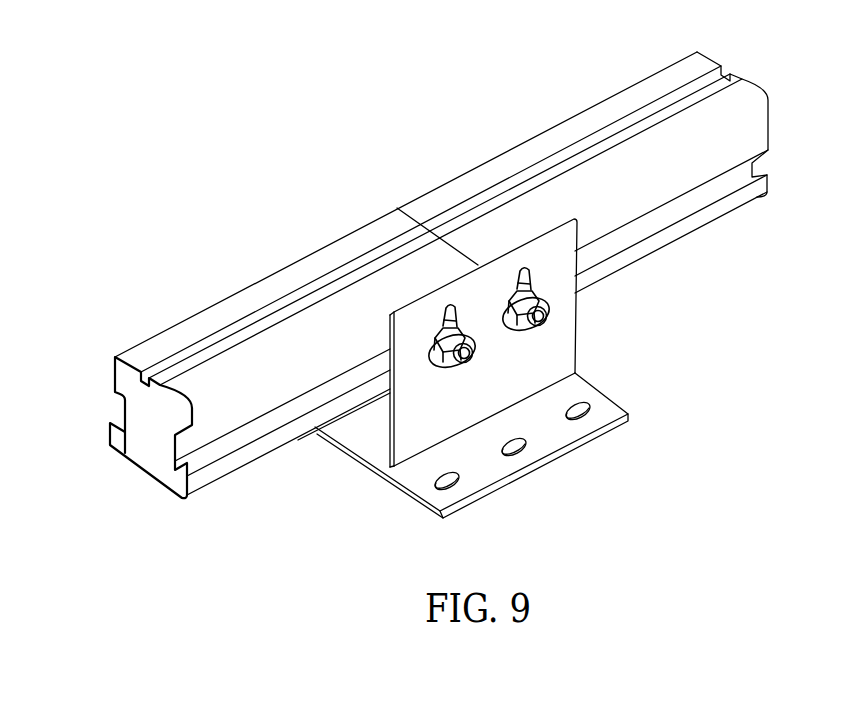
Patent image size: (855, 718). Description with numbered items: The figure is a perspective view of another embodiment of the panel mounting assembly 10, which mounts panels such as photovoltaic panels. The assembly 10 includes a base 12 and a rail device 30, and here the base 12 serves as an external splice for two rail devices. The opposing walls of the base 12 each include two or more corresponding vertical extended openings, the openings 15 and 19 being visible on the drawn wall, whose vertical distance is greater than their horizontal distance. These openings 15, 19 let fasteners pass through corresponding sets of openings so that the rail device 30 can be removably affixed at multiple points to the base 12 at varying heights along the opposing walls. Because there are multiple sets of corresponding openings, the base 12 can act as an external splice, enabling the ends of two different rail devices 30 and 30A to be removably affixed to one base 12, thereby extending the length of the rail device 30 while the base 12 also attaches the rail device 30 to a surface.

The assembly 10 is at (258, 166).
The rail device 30 is at (583, 91).
The rail device 30A is at (139, 320).
The base 12 is at (432, 422).
The vertical extended opening 15 is at (530, 277).
The vertical extended opening 19 is at (457, 317).